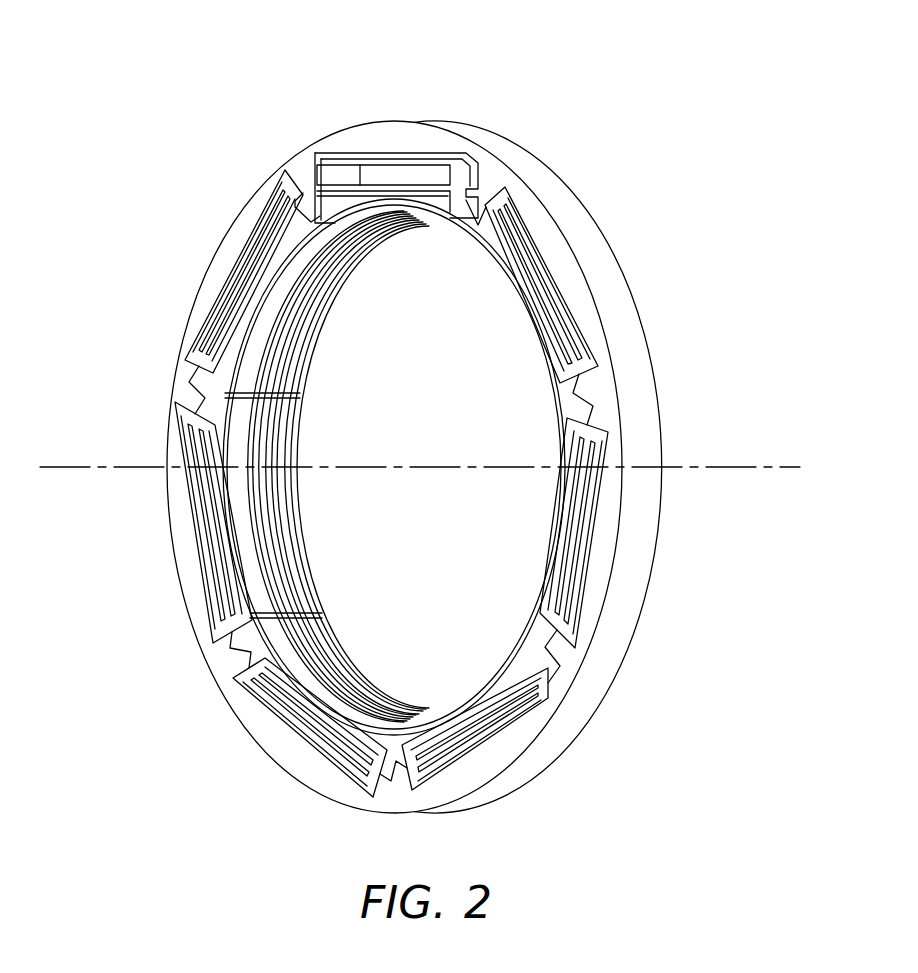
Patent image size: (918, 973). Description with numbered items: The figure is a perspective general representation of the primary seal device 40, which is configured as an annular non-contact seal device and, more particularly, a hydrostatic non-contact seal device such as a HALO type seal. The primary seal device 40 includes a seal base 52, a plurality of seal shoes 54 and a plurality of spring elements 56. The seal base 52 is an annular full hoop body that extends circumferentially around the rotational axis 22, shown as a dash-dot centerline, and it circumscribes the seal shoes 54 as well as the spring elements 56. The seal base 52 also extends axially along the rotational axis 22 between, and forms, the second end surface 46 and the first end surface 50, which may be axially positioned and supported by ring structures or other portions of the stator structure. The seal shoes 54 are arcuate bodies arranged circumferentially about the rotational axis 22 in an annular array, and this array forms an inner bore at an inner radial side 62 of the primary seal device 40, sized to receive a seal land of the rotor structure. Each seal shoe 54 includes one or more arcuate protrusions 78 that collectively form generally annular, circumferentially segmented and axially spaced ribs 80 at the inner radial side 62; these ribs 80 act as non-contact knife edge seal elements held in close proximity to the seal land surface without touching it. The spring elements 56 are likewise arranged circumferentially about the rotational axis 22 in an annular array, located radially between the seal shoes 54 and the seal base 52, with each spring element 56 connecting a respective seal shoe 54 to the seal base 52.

The primary seal device 40 is at (613, 108).
The second end surface 46 is at (500, 134).
The first end surface 50 is at (345, 142).
The seal base 52 is at (548, 238).
The seal shoes 54 is at (537, 347).
The spring elements 56 is at (550, 290).
The inner radial side 62 is at (287, 430).
The arcuate protrusions 78 is at (278, 523).
The ribs 80 is at (273, 562).
The rotational axis 22 is at (118, 484).